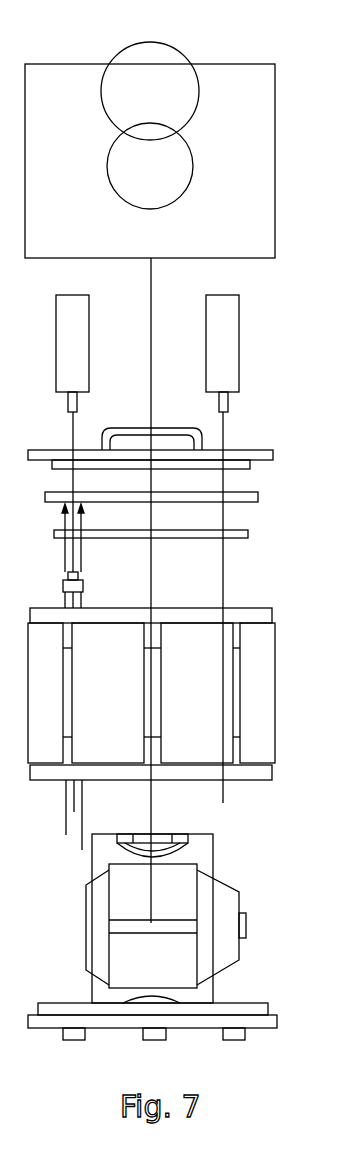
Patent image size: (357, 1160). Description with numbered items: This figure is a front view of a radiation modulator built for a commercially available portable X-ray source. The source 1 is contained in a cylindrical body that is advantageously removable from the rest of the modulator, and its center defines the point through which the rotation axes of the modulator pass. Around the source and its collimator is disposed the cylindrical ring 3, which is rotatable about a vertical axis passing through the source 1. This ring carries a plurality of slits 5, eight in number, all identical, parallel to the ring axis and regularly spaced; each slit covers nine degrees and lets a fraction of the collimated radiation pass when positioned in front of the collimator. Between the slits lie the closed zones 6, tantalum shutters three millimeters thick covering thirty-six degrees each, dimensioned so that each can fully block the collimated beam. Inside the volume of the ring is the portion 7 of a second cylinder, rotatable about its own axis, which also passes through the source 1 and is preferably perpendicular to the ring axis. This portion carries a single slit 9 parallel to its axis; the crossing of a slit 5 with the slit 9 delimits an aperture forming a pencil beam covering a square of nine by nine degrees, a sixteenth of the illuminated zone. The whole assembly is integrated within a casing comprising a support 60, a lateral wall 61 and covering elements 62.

The source 1 is at (205, 845).
The cylindrical ring 3 is at (173, 674).
The slits 5 is at (157, 742).
The closed zones 6 is at (123, 635).
The portion of a second cylinder 7 is at (164, 923).
The single slit 9 is at (148, 922).
The support 60 is at (258, 1028).
The lateral wall 61 is at (235, 64).
The covering elements 62 is at (245, 482).